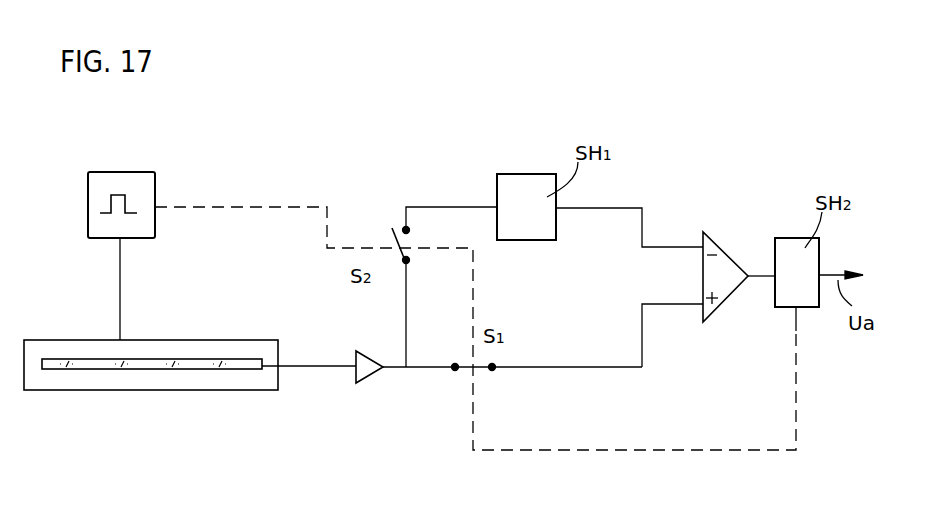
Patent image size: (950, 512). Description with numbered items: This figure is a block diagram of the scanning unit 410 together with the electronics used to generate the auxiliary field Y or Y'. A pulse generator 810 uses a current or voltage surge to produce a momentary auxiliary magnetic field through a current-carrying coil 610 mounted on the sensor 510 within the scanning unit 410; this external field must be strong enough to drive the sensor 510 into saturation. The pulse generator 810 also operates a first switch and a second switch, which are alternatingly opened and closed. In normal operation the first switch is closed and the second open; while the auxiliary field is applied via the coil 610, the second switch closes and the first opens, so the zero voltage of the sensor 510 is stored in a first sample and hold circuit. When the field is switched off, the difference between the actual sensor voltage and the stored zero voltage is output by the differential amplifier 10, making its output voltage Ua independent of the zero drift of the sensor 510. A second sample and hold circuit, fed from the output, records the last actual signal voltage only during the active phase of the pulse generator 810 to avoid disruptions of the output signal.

The pulse generator 810 is at (145, 196).
The coil 610 is at (188, 340).
The sensor 510 is at (100, 357).
The scanning unit 410 is at (102, 363).
The differential amplifier 10 is at (728, 262).